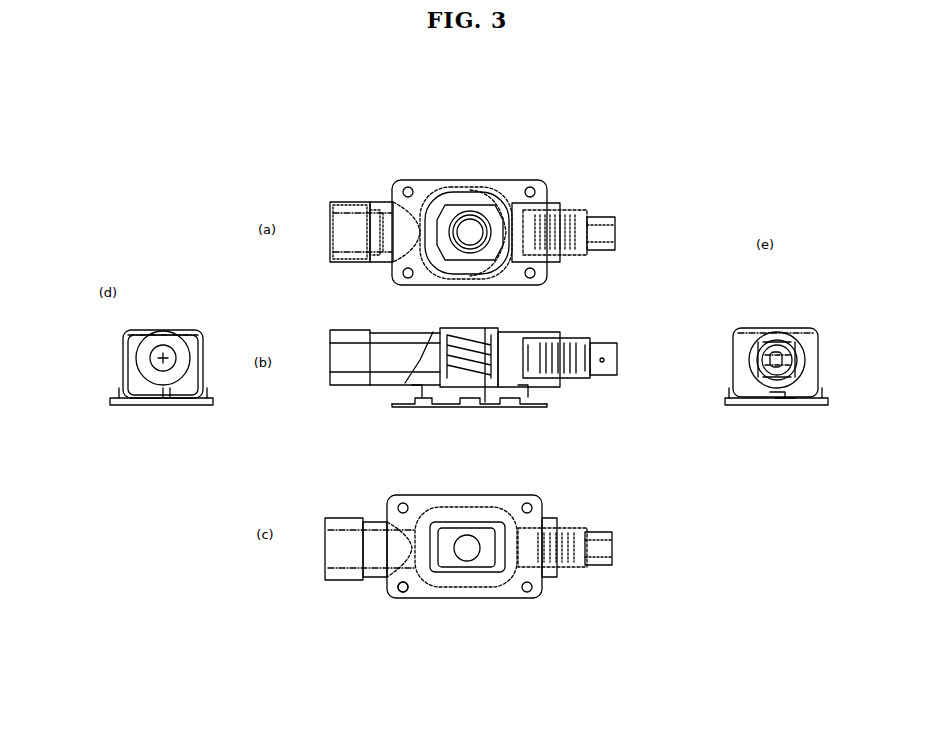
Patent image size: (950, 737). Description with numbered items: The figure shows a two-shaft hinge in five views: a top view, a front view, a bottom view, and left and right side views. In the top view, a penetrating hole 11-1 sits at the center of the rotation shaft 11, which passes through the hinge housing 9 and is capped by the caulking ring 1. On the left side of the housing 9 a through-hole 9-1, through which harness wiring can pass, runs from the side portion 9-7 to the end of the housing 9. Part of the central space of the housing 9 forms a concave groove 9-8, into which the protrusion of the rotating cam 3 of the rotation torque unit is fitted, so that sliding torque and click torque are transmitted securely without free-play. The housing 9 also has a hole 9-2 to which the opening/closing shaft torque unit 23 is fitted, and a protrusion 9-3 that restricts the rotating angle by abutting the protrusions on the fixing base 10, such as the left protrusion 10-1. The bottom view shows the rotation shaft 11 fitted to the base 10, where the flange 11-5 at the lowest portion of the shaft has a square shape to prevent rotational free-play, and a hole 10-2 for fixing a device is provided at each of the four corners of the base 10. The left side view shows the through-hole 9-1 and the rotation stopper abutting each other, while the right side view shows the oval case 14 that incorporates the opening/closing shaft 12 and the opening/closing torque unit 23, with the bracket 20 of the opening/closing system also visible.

The caulking ring 1 is at (477, 253).
The second rotating cam 3 is at (457, 210).
The hinge housing 9 is at (337, 198).
The through-hole 9-1 is at (340, 236).
The hole 9-2 is at (800, 373).
The protrusion 9-3 is at (158, 400).
The side portion 9-7 is at (405, 232).
The concave groove 9-8 is at (497, 207).
The fixing base 10 is at (513, 183).
The protrusion 10-1 is at (168, 400).
The hole 10-2 is at (403, 590).
The rotation shaft 11 is at (470, 405).
The penetrating hole 11-1 is at (467, 238).
The flange 11-5 is at (482, 562).
The opening/closing shaft 12 is at (775, 348).
The case for the opening/closing shaft 14 is at (750, 358).
The bracket 20 is at (608, 332).
The opening/closing shaft torque unit 23 is at (587, 203).